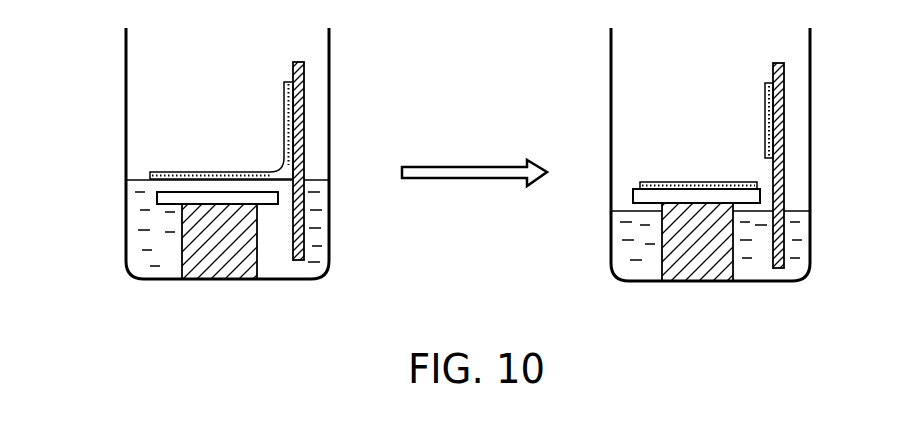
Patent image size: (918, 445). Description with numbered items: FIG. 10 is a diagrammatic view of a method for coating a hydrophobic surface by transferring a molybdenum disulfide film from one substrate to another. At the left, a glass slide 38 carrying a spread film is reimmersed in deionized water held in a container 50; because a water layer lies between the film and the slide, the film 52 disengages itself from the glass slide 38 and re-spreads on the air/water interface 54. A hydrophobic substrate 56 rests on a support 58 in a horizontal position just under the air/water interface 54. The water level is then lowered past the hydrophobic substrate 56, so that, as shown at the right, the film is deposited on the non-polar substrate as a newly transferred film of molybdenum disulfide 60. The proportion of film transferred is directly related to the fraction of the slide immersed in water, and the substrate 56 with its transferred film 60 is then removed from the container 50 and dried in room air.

The glass slide 38 is at (305, 106).
The container 50 is at (320, 258).
The film 52 is at (190, 172).
The air/water interface 54 is at (316, 178).
The hydrophobic substrate 56 is at (162, 200).
The support 58 is at (228, 266).
The transferred film of molybdenum disulfide 60 is at (665, 182).